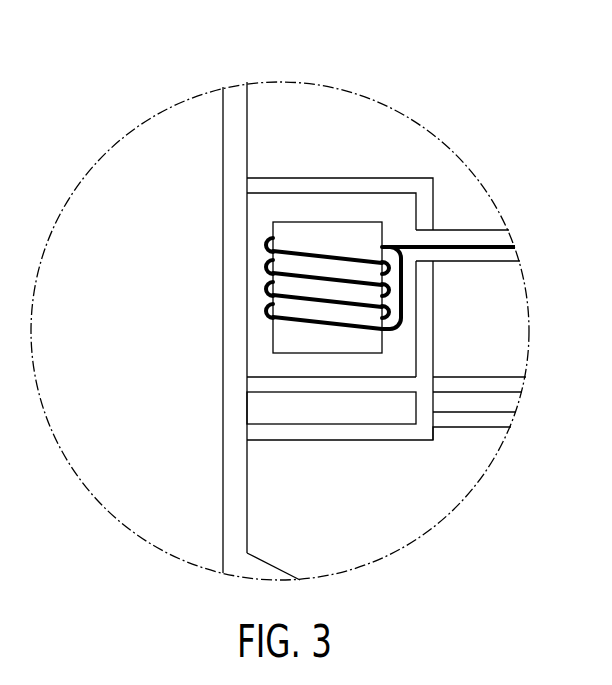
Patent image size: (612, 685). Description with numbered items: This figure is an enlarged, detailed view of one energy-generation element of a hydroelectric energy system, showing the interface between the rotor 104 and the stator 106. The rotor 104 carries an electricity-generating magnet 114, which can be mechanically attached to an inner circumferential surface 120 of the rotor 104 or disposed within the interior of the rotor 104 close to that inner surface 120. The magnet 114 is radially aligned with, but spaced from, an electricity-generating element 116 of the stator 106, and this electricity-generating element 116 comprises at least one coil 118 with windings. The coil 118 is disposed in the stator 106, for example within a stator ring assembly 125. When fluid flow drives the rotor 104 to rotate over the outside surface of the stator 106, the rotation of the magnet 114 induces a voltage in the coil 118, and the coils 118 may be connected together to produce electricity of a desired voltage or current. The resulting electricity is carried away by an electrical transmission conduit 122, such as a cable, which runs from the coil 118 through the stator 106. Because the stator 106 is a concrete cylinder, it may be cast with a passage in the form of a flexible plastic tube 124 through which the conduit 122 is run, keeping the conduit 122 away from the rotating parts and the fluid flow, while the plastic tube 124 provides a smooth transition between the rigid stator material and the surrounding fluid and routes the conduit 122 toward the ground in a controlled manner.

The rotor 104 is at (388, 536).
The stator 106 is at (292, 93).
The electricity-generating magnet 114 is at (253, 410).
The electricity-generating element 116 is at (270, 223).
The coil 118 is at (260, 260).
The inner circumferential surface 120 is at (335, 442).
The electrical transmission conduit 122 is at (473, 245).
The plastic tube 124 is at (468, 262).
The stator ring assembly 125 is at (318, 208).